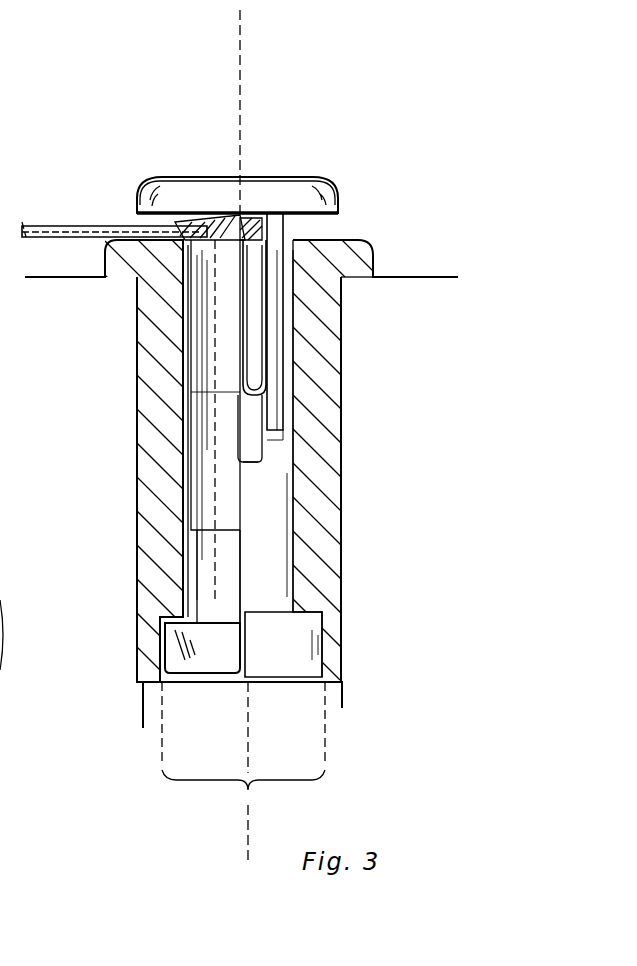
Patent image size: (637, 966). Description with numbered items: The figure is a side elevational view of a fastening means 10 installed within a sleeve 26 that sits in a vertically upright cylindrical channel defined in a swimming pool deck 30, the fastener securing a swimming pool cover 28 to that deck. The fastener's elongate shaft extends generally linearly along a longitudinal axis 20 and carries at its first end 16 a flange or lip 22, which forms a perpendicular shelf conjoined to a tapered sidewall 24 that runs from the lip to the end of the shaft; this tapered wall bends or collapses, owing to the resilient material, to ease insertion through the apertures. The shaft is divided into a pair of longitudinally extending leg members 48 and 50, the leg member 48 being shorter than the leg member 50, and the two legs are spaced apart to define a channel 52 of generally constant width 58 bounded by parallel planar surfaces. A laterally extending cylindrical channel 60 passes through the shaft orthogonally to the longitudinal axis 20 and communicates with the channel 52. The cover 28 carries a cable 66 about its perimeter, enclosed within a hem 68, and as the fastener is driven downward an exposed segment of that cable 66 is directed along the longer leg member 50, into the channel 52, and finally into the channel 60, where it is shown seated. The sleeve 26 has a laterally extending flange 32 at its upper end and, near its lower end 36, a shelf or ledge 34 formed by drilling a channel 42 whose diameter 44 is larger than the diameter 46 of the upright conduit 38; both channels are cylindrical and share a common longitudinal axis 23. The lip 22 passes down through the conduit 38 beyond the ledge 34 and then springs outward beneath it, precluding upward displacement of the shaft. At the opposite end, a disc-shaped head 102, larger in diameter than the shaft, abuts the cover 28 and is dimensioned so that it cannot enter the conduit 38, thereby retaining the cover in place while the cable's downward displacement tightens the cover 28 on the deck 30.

The fastening means 10 is at (243, 593).
The first end 16 is at (200, 685).
The longitudinal axis 20 is at (248, 867).
The flange 22 is at (197, 623).
The common longitudinal axis 23 is at (240, 52).
The tapered sidewall 24 is at (163, 663).
The sleeve 26 is at (357, 240).
The swimming pool cover 28 is at (62, 228).
The swimming pool deck 30 is at (55, 278).
The laterally-extending flange 32 is at (373, 262).
The shelf 34 is at (160, 617).
The lower end 36 is at (327, 692).
The conduit 38 is at (293, 363).
The channel 42 is at (323, 632).
The diameter 44 is at (248, 788).
The diameter 46 is at (247, 530).
The leg member 48 is at (283, 407).
The leg member 50 is at (138, 448).
The channel 52 is at (250, 437).
The width 58 is at (248, 462).
The cylindrical channel 60 is at (183, 390).
The cable 66 is at (262, 213).
The hem 68 is at (213, 228).
The head 102 is at (330, 185).